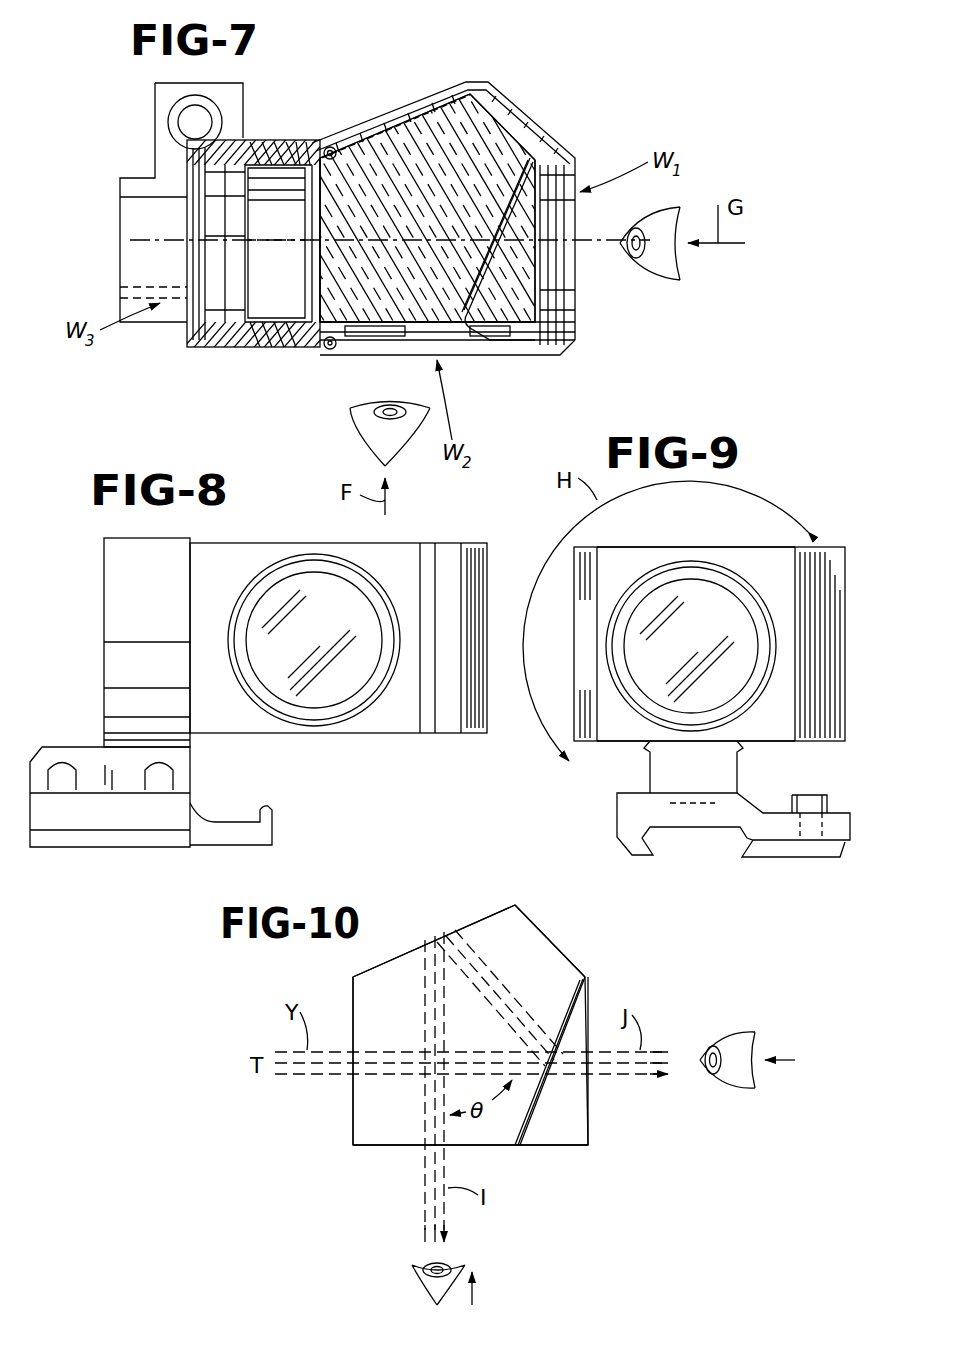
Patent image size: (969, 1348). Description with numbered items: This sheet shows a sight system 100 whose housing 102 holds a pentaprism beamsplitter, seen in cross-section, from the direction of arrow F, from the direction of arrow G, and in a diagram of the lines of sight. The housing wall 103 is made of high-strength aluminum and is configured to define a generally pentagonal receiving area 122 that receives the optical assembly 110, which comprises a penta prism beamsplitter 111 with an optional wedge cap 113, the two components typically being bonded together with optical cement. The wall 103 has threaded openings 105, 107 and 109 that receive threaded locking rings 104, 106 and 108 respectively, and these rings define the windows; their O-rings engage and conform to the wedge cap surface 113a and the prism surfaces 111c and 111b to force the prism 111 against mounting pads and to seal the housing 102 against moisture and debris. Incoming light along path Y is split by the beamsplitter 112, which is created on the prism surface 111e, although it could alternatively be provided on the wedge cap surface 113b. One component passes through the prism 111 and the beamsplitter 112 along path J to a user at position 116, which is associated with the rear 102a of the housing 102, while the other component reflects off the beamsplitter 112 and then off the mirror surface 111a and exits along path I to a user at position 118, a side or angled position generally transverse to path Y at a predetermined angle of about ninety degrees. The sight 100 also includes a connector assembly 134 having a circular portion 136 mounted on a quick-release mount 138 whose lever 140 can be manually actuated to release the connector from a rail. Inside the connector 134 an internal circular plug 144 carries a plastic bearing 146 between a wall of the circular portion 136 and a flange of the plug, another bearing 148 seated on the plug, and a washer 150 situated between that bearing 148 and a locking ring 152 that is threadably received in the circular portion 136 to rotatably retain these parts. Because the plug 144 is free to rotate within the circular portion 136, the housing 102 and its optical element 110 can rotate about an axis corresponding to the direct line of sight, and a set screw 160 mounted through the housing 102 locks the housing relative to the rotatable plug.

In FIG. 7, the sight system 100 is at (603, 110).
In FIG. 10, the sight system 100 is at (548, 905).
In FIG. 7, the housing 102 is at (560, 112).
In FIG. 8, the housing 102 is at (265, 541).
In FIG. 9, the housing 102 is at (820, 546).
In FIG. 9, the rear of the housing 102a is at (622, 720).
In FIG. 7, the housing wall 103 is at (425, 104).
In FIG. 7, the locking ring 104 is at (568, 180).
In FIG. 9, the locking ring 104 is at (740, 700).
In FIG. 7, the threaded opening 105 is at (578, 206).
In FIG. 7, the locking ring 106 is at (345, 348).
In FIG. 8, the locking ring 106 is at (332, 700).
In FIG. 7, the threaded opening 107 is at (470, 350).
In FIG. 7, the locking ring 108 is at (272, 348).
In FIG. 7, the threaded opening 109 is at (190, 255).
In FIG. 7, the optical assembly 110 is at (450, 90).
In FIG. 10, the optical assembly 110 is at (370, 1150).
In FIG. 7, the penta prism beamsplitter 111 is at (492, 93).
In FIG. 10, the penta prism beamsplitter 111 is at (484, 905).
In FIG. 7, the mirror surface 111a is at (398, 103).
In FIG. 10, the mirror surface 111a is at (400, 950).
In FIG. 7, the prism surface 111b is at (282, 240).
In FIG. 10, the prism surface 111b is at (350, 1115).
In FIG. 7, the prism surface 111c is at (405, 336).
In FIG. 10, the prism surface 111c is at (395, 1150).
In FIG. 7, the prism surface 111e is at (505, 330).
In FIG. 10, the prism surface 111e is at (560, 975).
In FIG. 7, the beamsplitter surface 112 is at (520, 135).
In FIG. 10, the beamsplitter surface 112 is at (560, 1012).
In FIG. 7, the wedge cap 113 is at (545, 340).
In FIG. 10, the wedge cap 113 is at (583, 1150).
In FIG. 10, the wedge cap surface 113a is at (590, 1112).
In FIG. 7, the wedge cap surface 113b is at (556, 304).
In FIG. 10, the wedge cap surface 113b is at (588, 995).
In FIG. 10, the viewing position 116 is at (790, 1060).
In FIG. 10, the viewing position 118 is at (478, 1290).
In FIG. 7, the receiving area 122 is at (330, 150).
In FIG. 8, the connector assembly 134 is at (100, 575).
In FIG. 8, the circular portion 136 is at (120, 603).
In FIG. 7, the quick-release mount 138 is at (120, 187).
In FIG. 8, the quick-release mount 138 is at (140, 845).
In FIG. 9, the quick-release mount 138 is at (715, 830).
In FIG. 8, the lever 140 is at (275, 828).
In FIG. 7, the plug 144 is at (270, 142).
In FIG. 7, the plastic bearing 146 is at (255, 348).
In FIG. 7, the bearing 148 is at (230, 348).
In FIG. 7, the washer 150 is at (220, 230).
In FIG. 7, the locking ring 152 is at (200, 165).
In FIG. 7, the set screw 160 is at (300, 142).